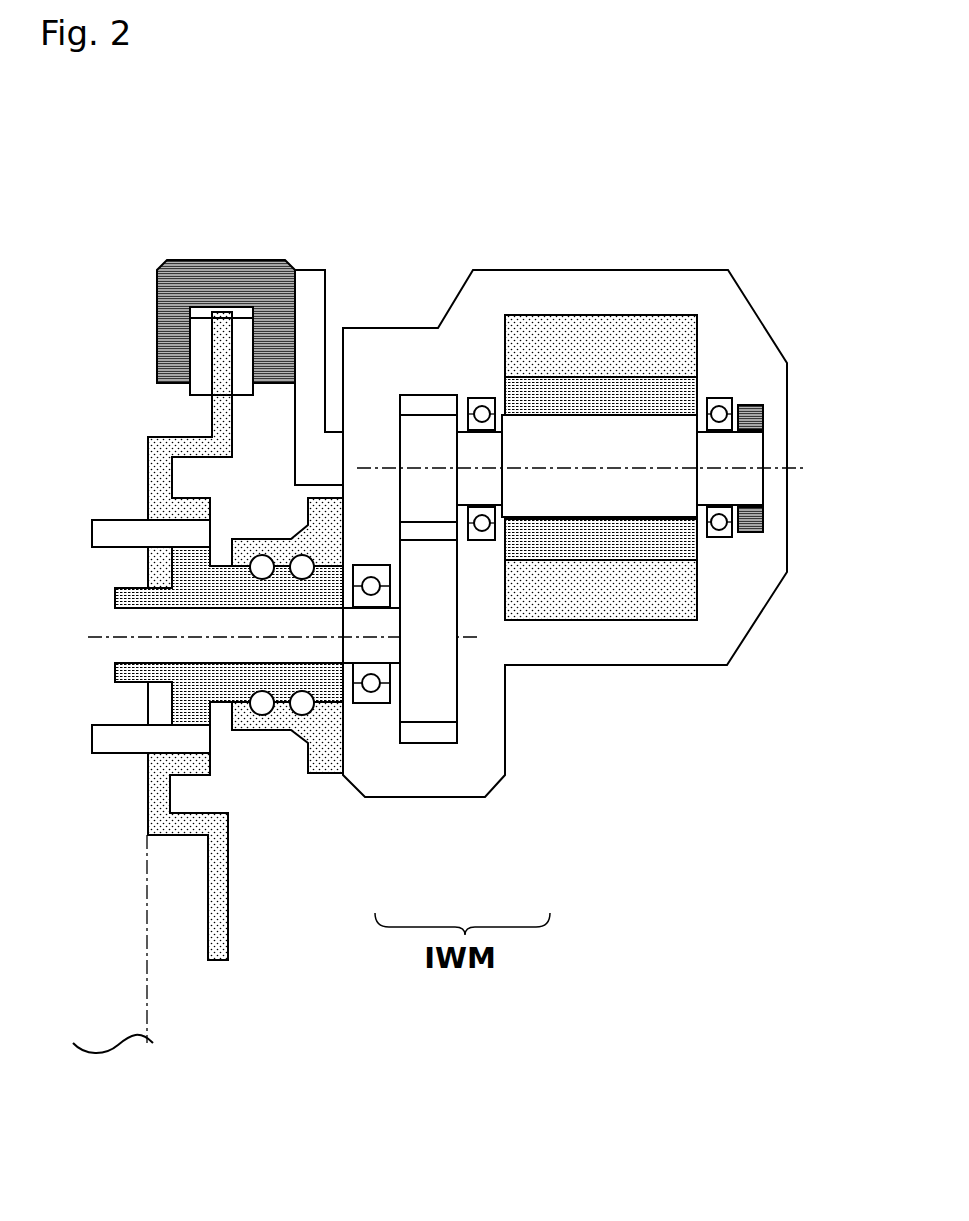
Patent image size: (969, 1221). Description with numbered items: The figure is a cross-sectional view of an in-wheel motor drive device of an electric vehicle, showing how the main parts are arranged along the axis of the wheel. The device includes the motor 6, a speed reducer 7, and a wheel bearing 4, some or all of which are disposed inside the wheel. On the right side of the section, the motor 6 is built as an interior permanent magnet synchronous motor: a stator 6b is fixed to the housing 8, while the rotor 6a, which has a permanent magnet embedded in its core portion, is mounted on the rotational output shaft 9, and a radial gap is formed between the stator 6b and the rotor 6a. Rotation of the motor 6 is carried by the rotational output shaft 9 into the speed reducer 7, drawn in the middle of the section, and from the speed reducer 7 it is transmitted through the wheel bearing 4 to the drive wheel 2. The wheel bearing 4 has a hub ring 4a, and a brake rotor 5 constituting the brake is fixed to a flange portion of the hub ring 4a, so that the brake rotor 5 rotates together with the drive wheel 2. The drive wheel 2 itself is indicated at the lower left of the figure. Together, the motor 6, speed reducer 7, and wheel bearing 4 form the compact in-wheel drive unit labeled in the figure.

The drive wheel 2 is at (130, 968).
The wheel bearing 4 is at (267, 730).
The hub ring 4a is at (135, 593).
The brake rotor 5 is at (155, 461).
The motor 6 is at (599, 549).
The rotor 6a is at (680, 395).
The stator 6b is at (642, 345).
The speed reducer 7 is at (435, 743).
The housing 8 is at (737, 598).
The rotational output shaft 9 is at (611, 459).